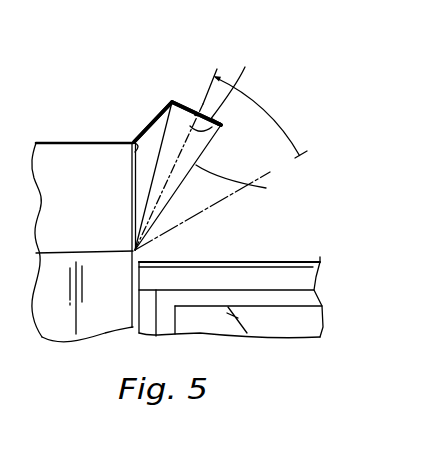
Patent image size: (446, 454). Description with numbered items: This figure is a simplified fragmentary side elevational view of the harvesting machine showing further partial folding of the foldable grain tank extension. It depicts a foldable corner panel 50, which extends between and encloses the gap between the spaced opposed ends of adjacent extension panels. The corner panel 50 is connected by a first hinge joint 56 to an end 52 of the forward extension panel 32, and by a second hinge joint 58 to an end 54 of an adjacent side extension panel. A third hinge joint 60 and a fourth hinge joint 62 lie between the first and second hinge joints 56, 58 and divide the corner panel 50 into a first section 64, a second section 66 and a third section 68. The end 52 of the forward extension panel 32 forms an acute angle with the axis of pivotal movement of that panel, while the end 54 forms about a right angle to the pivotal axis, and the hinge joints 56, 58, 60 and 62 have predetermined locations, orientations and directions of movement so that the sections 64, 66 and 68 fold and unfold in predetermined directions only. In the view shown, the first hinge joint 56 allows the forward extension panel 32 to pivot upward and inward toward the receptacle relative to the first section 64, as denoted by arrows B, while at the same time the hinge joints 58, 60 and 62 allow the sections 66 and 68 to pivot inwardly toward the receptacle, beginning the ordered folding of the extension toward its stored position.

The foldable corner panel 50 is at (172, 100).
The end of forward or rear extension panel 52 is at (217, 116).
The end of side extension panel 54 is at (133, 138).
The first hinge joint 56 is at (199, 218).
The second hinge joint 58 is at (131, 175).
The third hinge joint 60 is at (213, 133).
The fourth hinge joint 62 is at (131, 206).
The first section 64 is at (235, 84).
The second section 66 is at (177, 110).
The third section 68 is at (152, 121).
The forward extension panel 32 is at (248, 185).
The arrows B is at (277, 125).